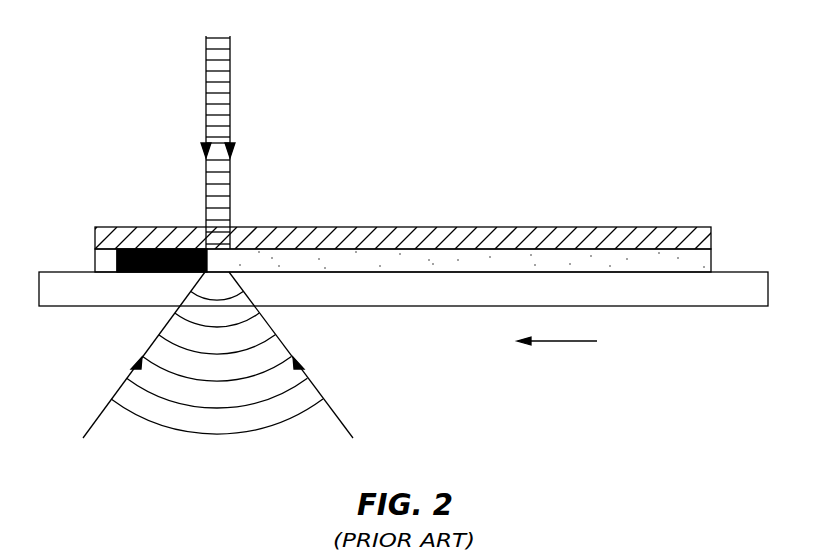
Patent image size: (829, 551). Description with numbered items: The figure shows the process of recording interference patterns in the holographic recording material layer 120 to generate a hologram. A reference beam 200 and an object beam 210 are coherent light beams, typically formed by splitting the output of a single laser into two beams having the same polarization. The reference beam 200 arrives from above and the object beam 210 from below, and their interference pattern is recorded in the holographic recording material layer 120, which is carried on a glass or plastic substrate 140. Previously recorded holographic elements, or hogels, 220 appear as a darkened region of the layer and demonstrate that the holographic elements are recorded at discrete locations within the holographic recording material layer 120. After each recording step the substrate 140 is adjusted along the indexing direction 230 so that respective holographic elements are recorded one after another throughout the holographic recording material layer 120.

The reference beam 200 is at (231, 114).
The object beam 210 is at (320, 392).
The previously recorded holographic elements (hogels) 220 is at (127, 247).
The holographic recording material layer 120 is at (713, 259).
The substrate 140 is at (758, 299).
The indexing direction 230 is at (697, 378).